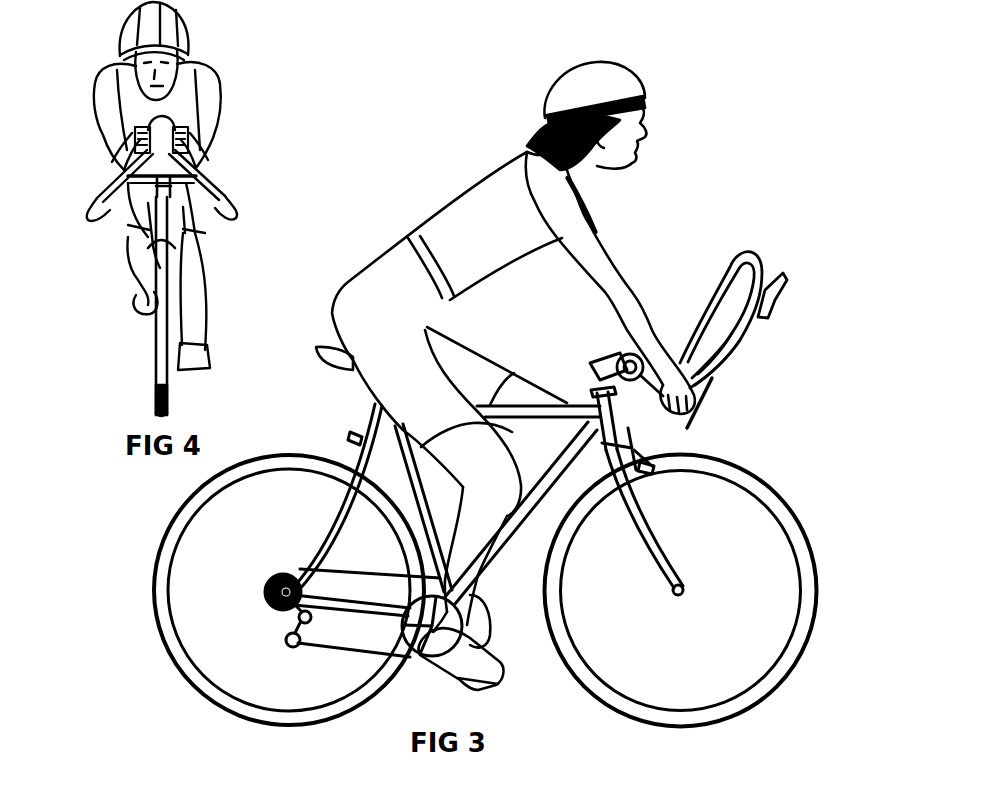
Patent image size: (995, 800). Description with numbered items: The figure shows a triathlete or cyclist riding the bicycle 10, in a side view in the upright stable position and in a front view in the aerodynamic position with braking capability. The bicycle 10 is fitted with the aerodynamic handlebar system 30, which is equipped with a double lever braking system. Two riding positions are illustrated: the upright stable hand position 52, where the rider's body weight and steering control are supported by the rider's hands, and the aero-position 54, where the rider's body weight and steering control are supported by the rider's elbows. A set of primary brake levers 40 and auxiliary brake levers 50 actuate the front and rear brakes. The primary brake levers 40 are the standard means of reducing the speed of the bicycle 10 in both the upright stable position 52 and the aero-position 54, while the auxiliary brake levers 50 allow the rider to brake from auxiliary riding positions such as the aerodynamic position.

In FIG. 3, the bicycle 10 is at (797, 504).
In FIG. 4, the bicycle 10 is at (152, 358).
In FIG. 3, the aerodynamic handlebar system 30 is at (699, 321).
In FIG. 4, the aerodynamic handlebar system 30 is at (169, 170).
In FIG. 3, the primary brake levers 40 is at (720, 384).
In FIG. 4, the primary brake levers 40 is at (213, 197).
In FIG. 4, the auxiliary brake levers 50 is at (188, 148).
In FIG. 3, the upright stable hand position 52 is at (655, 402).
In FIG. 4, the upright stable hand position 52 is at (93, 212).
In FIG. 4, the aero-position 54 is at (165, 122).